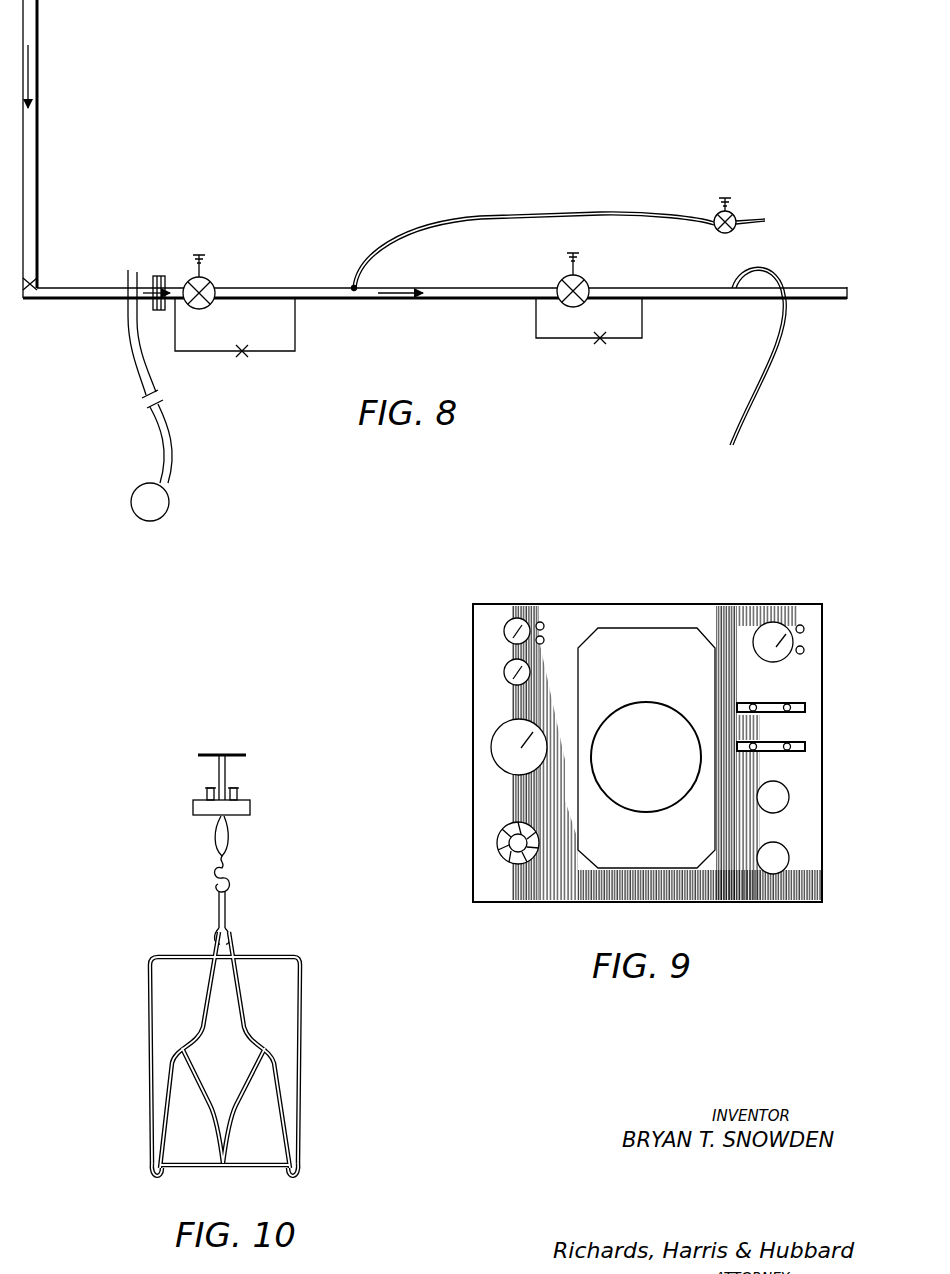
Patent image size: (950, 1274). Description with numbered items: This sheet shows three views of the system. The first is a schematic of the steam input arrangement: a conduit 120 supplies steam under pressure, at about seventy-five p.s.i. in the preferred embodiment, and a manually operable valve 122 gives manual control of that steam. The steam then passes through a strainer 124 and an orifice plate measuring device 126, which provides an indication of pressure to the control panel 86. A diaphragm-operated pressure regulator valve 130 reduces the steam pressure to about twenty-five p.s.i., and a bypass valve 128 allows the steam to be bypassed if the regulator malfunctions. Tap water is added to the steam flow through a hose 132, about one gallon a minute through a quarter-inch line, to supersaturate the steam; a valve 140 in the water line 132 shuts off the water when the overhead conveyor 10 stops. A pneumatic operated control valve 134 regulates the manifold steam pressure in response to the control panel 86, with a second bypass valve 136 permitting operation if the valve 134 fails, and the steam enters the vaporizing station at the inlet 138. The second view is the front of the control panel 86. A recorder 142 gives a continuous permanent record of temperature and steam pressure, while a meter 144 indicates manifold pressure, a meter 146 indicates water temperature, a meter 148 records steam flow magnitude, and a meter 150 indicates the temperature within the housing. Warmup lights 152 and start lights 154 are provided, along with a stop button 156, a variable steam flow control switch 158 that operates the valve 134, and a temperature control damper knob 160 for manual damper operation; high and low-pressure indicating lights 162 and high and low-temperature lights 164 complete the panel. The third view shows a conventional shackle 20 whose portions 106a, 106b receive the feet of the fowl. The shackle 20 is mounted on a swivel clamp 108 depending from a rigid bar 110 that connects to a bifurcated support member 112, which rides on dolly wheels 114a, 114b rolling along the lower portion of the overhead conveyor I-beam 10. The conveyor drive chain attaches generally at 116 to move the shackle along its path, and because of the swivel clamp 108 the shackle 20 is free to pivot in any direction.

In FIG. 8, the conduit 120 is at (27, 180).
In FIG. 8, the manually operable valve 122 is at (30, 288).
In FIG. 8, the strainer 124 is at (137, 276).
In FIG. 8, the orifice plate measuring device 126 is at (165, 282).
In FIG. 8, the bypass valve 128 is at (243, 356).
In FIG. 8, the pressure regulator valve 130 is at (214, 280).
In FIG. 8, the hose 132 is at (578, 213).
In FIG. 8, the pneumatic operated control valve 134 is at (587, 279).
In FIG. 8, the bypass valve 136 is at (601, 343).
In FIG. 8, the inlet 138 is at (773, 345).
In FIG. 8, the valve 140 is at (735, 212).
In FIG. 9, the control panel 86 is at (651, 590).
In FIG. 9, the recorder 142 is at (656, 764).
In FIG. 9, the meter 144 is at (504, 631).
In FIG. 9, the meter 146 is at (504, 672).
In FIG. 9, the meter 148 is at (491, 749).
In FIG. 9, the meter 150 is at (762, 628).
In FIG. 9, the warmup lights 152 is at (737, 707).
In FIG. 9, the start lights 154 is at (746, 765).
In FIG. 9, the stop button 156 is at (760, 788).
In FIG. 9, the variable steam flow control switch 158 is at (497, 843).
In FIG. 9, the temperature control damper knob 160 is at (757, 850).
In FIG. 9, the high and low-pressure indicating lights 162 is at (545, 636).
In FIG. 9, the high and low-temperature lights 164 is at (804, 646).
In FIG. 10, the overhead conveyor I-beam 10 is at (240, 754).
In FIG. 10, the bifurcated support member 112 is at (251, 806).
In FIG. 10, the dolly wheel 114a is at (208, 791).
In FIG. 10, the dolly wheel 114b is at (235, 791).
In FIG. 10, the drive chain attachment 116 is at (219, 822).
In FIG. 10, the rigid bar 110 is at (224, 852).
In FIG. 10, the swivel clamp 108 is at (217, 896).
In FIG. 10, the shackle 20 is at (329, 952).
In FIG. 10, the shackle portion 106a is at (152, 1166).
In FIG. 10, the shackle portion 106b is at (298, 1166).